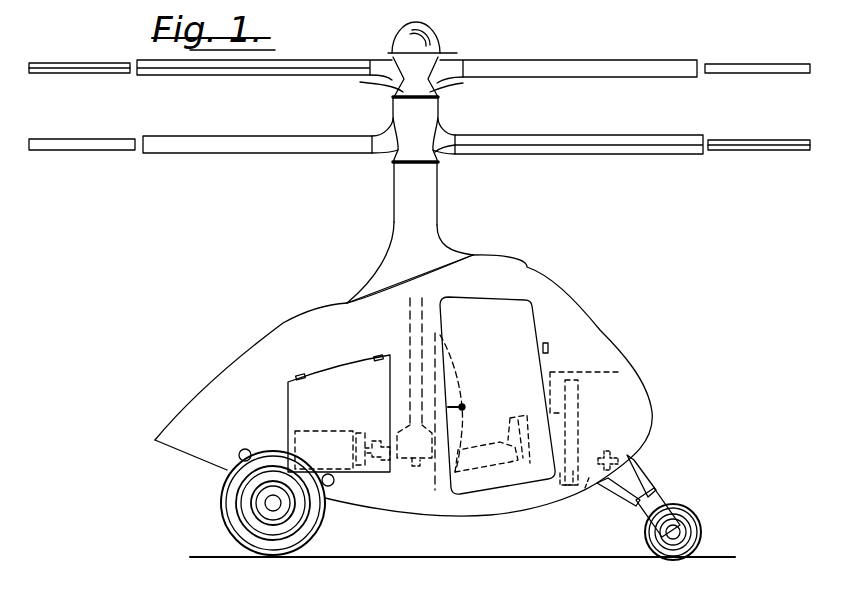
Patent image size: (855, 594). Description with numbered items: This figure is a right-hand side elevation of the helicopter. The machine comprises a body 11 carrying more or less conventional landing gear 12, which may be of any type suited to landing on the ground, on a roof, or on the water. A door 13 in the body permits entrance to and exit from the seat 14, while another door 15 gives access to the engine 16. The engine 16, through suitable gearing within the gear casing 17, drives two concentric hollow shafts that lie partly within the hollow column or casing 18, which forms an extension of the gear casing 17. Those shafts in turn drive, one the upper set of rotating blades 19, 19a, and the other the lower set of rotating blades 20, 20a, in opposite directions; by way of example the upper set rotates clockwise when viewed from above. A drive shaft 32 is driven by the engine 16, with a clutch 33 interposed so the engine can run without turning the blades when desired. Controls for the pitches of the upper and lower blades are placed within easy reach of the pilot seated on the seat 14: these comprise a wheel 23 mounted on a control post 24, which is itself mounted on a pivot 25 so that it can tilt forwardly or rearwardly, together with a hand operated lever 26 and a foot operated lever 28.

The body 11 is at (540, 235).
The landing gear 12 is at (230, 508).
The door 13 is at (503, 339).
The seat 14 is at (488, 470).
The door 15 is at (345, 404).
The engine 16 is at (350, 473).
The gear casing 17 is at (440, 498).
The hollow column or casing 18 is at (410, 318).
The upper rotating blade 19 is at (508, 70).
The upper rotating blade 19a is at (337, 72).
The lower rotating blade 20 is at (305, 148).
The lower rotating blade 20a is at (520, 147).
The wheel 23 is at (560, 372).
The control post 24 is at (577, 408).
The pivot 25 is at (587, 492).
The hand operated lever 26 is at (528, 500).
The foot operated lever 28 is at (618, 453).
The drive shaft 32 is at (413, 477).
The clutch 33 is at (363, 470).